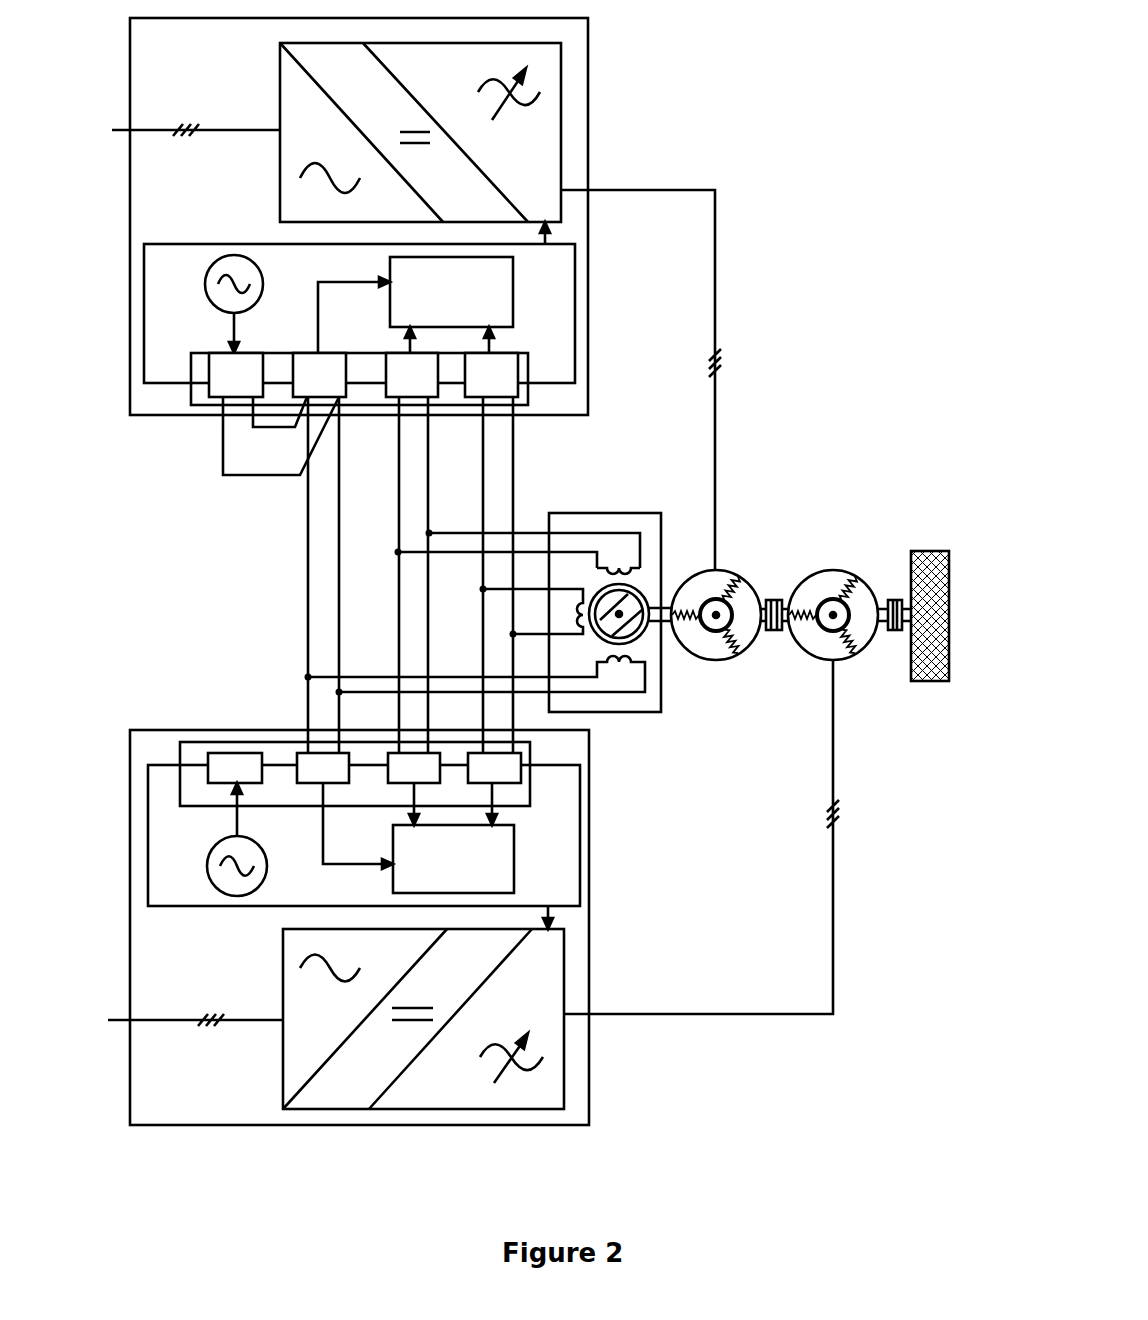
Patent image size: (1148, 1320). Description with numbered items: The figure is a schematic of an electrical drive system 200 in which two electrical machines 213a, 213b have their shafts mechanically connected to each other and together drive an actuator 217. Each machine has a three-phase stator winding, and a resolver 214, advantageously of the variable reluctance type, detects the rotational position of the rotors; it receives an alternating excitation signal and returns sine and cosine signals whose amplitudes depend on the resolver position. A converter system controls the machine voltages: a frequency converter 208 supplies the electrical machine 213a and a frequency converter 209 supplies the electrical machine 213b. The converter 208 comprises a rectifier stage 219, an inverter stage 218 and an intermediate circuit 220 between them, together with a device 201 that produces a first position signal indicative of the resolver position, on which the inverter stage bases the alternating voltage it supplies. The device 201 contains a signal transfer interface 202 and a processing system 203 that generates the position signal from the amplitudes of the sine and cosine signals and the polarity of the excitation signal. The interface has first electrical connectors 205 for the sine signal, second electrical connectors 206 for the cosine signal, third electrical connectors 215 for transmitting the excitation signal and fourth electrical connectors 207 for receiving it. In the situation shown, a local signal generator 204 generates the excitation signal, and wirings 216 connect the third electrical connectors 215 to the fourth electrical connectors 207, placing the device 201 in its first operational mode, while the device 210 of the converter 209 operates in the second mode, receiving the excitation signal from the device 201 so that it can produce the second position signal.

The electrical drive system 200 is at (812, 127).
The device for producing a first position signal 201 is at (158, 244).
The signal transfer interface 202 is at (529, 373).
The processing system 203 is at (434, 302).
The local signal generator 204 is at (205, 284).
The first electrical connectors 205 is at (395, 386).
The second electrical connectors 206 is at (474, 386).
The fourth electrical connectors 207 is at (302, 386).
The converter 208 is at (416, 294).
The converter 209 is at (590, 946).
The device for producing a second position signal 210 is at (160, 906).
The electrical machine 213a is at (726, 570).
The electrical machine 213b is at (818, 570).
The resolver 214 is at (610, 513).
The third electrical connectors 215 is at (219, 386).
The wirings 216 is at (250, 475).
The actuator 217 is at (926, 551).
The inverter stage 218 is at (456, 79).
The rectifier stage 219 is at (328, 141).
The intermediate circuit 220 is at (380, 92).